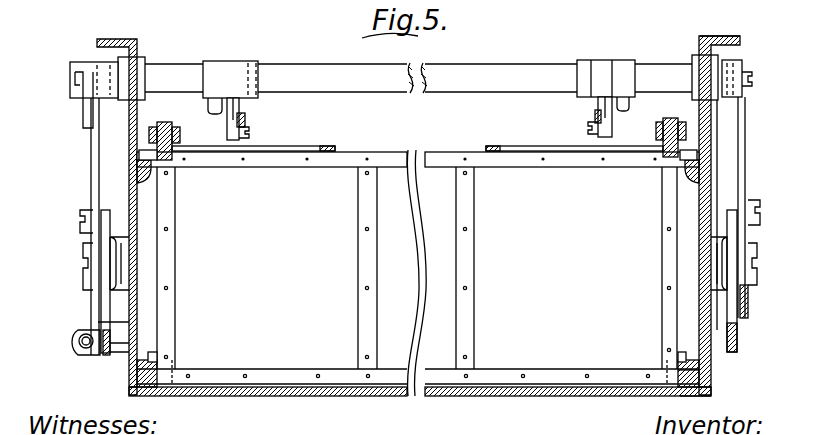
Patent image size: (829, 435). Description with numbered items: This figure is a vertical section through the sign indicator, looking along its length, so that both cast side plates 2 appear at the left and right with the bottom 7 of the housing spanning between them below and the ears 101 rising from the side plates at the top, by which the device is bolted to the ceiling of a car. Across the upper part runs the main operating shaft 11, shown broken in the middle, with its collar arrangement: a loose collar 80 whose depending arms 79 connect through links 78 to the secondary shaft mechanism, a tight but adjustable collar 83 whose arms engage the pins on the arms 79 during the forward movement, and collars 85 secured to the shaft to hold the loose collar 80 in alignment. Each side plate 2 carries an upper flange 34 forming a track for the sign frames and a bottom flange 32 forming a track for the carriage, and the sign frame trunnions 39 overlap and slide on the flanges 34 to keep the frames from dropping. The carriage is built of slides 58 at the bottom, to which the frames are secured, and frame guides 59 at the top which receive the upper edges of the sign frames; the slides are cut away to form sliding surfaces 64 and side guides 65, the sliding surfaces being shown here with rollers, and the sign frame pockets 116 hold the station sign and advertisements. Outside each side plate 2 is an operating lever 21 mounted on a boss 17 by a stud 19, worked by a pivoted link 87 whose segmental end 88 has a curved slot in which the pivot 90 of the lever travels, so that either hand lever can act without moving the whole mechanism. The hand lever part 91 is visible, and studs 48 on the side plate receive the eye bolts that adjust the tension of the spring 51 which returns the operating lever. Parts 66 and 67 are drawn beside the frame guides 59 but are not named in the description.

The side plates 2 is at (130, 182).
The bottom of the housing 7 is at (319, 393).
The main operating shaft 11 is at (495, 76).
The boss 17 is at (125, 265).
The stud 19 is at (752, 277).
The operating lever 21 is at (107, 305).
The inwardly extending flange 32 is at (135, 393).
The flange 34 is at (150, 175).
The trunnions 39 is at (172, 165).
The studs 48 is at (78, 336).
The spring 51 is at (82, 347).
The slides 58 is at (138, 384).
The frame guides 59 is at (166, 125).
The sliding surfaces 64 is at (686, 394).
The side guides 65 is at (700, 371).
The nut 66 is at (150, 134).
The nut 67 is at (180, 133).
The links 78 is at (247, 118).
The depending arms 79 is at (246, 104).
The loose collar 80 is at (600, 62).
The tight adjustable collar 83 is at (628, 62).
The collars 85 is at (250, 70).
The pivoted links 87 is at (96, 170).
The segmental end 88 is at (748, 306).
The pivots 90 is at (758, 212).
The lever part 91 is at (87, 115).
The ears 101 is at (760, 24).
The pockets 116 is at (140, 353).